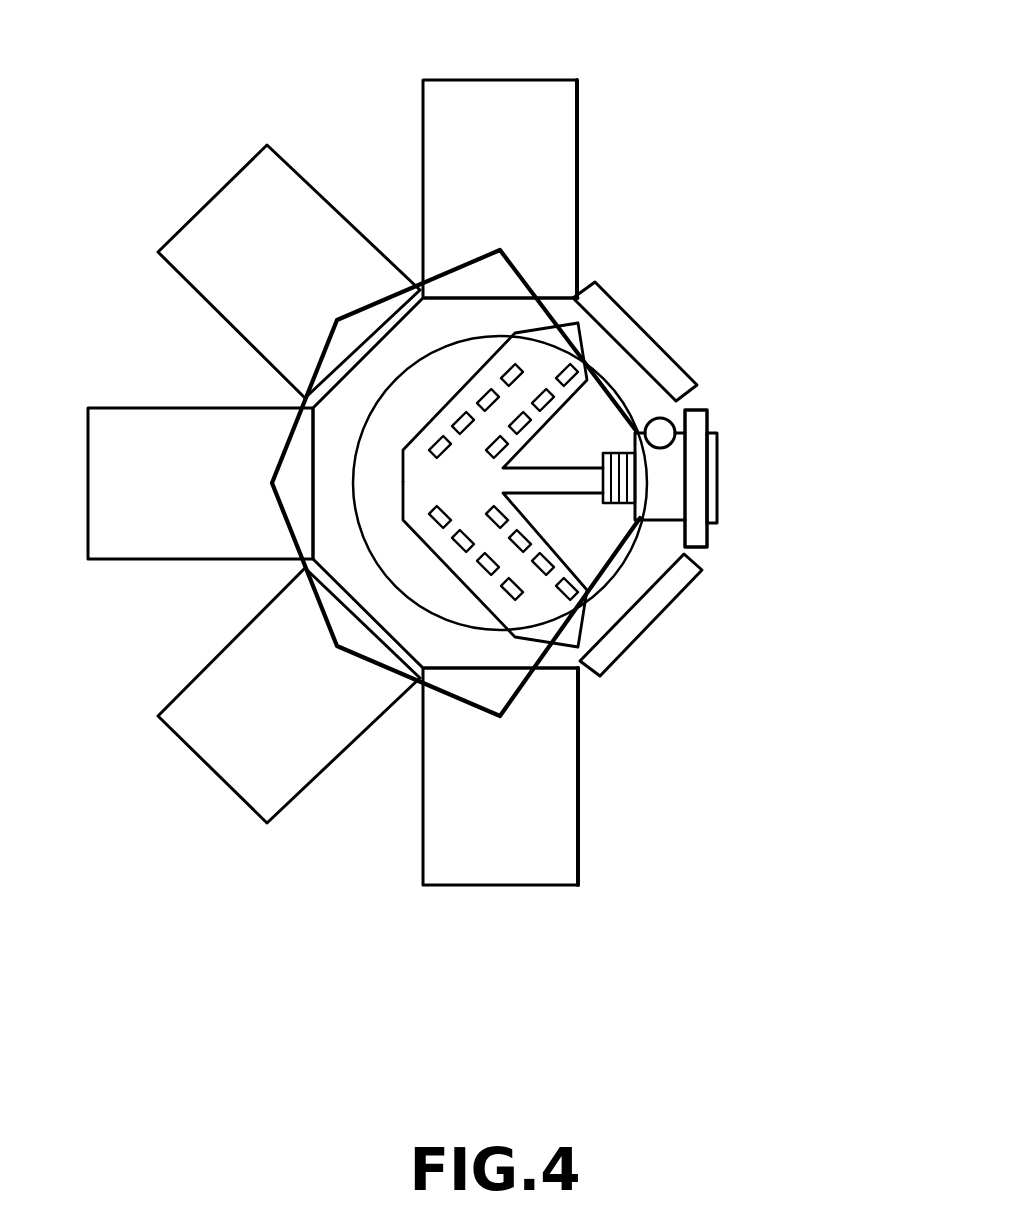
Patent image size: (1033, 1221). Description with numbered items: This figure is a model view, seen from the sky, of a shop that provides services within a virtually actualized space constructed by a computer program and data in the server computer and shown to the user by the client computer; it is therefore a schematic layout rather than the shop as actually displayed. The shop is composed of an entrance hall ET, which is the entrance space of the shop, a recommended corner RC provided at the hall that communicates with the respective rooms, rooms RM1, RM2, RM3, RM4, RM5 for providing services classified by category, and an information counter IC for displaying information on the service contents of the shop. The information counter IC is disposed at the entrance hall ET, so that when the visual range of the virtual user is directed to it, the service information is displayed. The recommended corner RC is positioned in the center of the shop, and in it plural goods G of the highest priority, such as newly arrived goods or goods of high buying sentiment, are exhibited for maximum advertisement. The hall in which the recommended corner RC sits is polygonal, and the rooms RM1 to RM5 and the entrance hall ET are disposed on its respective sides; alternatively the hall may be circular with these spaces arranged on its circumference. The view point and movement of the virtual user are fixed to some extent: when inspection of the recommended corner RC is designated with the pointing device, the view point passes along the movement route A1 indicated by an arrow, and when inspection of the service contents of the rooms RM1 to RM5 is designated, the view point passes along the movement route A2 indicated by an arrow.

The room RM1 is at (437, 128).
The room RM2 is at (207, 283).
The room RM3 is at (132, 546).
The room RM4 is at (278, 806).
The room RM5 is at (582, 842).
The movement route A1 is at (516, 333).
The movement route A2 is at (583, 600).
The goods G is at (575, 552).
The recommended corner RC is at (613, 382).
The information counter IC is at (662, 418).
The entrance hall ET is at (768, 466).